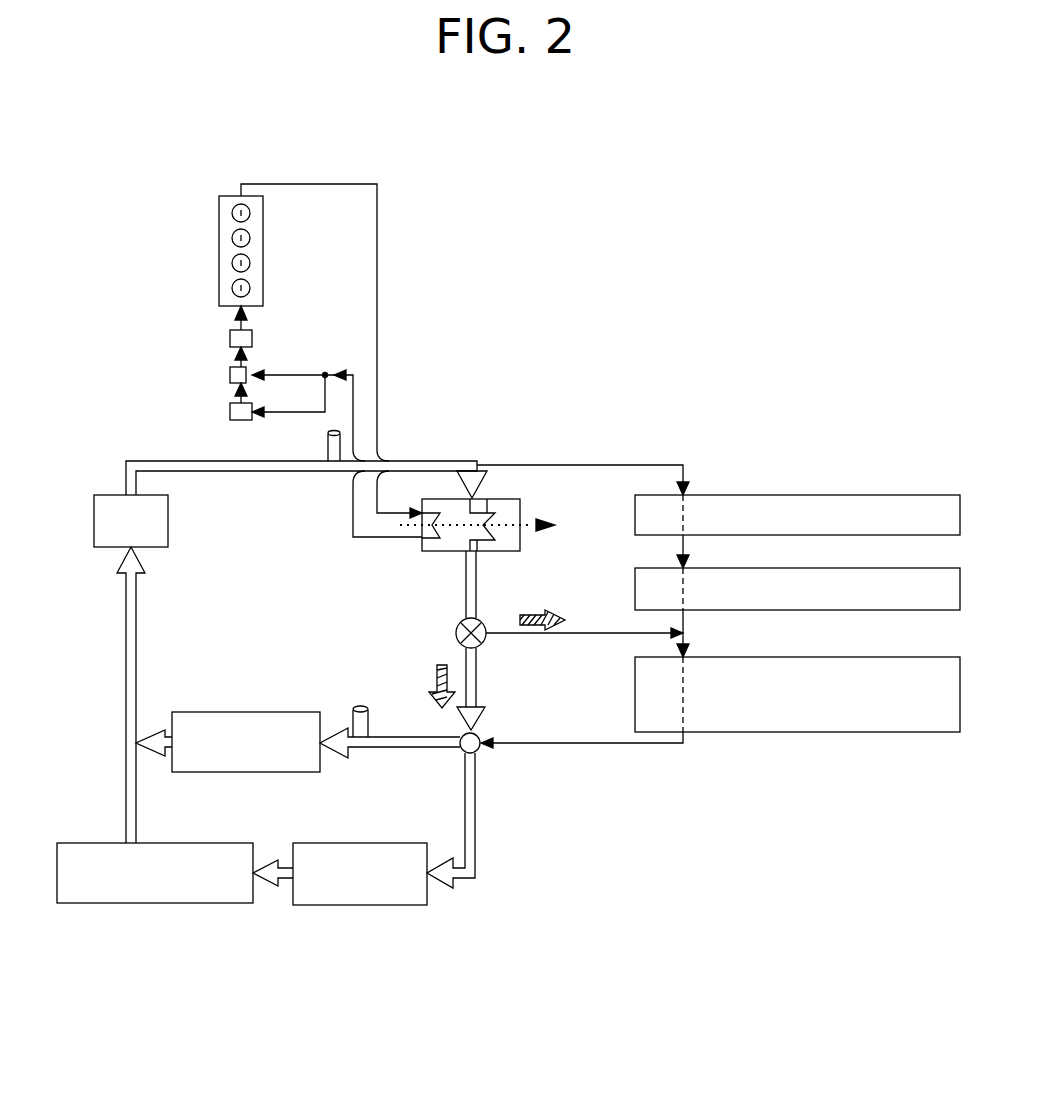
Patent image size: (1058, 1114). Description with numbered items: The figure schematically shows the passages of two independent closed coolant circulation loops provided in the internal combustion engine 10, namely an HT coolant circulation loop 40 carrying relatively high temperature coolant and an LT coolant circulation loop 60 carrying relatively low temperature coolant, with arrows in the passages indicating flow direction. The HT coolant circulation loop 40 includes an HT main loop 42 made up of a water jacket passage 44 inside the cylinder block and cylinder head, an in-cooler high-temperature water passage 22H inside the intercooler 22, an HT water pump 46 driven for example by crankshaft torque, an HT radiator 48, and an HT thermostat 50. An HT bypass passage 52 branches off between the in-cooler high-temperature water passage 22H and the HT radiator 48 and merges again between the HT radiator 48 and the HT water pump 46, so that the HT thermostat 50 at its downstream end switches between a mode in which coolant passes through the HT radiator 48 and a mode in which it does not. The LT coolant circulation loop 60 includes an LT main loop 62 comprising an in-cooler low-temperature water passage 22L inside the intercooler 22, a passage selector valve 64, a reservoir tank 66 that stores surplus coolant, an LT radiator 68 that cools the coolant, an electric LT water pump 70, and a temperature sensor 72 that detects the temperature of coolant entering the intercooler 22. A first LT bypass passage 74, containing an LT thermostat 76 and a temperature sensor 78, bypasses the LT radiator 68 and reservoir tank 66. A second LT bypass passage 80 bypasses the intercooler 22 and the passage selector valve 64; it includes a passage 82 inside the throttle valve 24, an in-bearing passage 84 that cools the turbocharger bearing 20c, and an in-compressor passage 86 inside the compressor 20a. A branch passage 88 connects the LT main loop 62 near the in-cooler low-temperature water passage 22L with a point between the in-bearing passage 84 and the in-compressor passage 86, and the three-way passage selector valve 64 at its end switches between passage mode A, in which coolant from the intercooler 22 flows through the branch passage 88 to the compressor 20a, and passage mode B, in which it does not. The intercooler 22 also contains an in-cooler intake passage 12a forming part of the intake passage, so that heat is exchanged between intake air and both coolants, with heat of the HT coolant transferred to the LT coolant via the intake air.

The internal combustion engine 10 is at (200, 223).
The in-cooler intake passage 12a is at (505, 512).
The compressor 20a is at (842, 657).
The turbocharger bearing 20c is at (832, 567).
The intercooler 22 is at (418, 555).
The in-cooler high-temperature water passage 22H is at (428, 556).
The in-cooler low-temperature water passage 22L is at (490, 505).
The throttle valve 24 is at (845, 495).
The HT coolant circulation loop 40 is at (408, 254).
The HT main loop 42 is at (378, 300).
The passage (water jacket) 44 is at (222, 248).
The HT water pump 46 is at (230, 339).
The HT radiator 48 is at (230, 412).
The HT thermostat 50 is at (230, 376).
The HT bypass passage 52 is at (292, 372).
The LT coolant circulation loop 60 is at (645, 430).
The LT main loop 62 is at (428, 461).
The passage selector valve 64 is at (488, 646).
The reservoir tank 66 is at (358, 843).
The LT radiator 68 is at (90, 843).
The LT water pump 70 is at (94, 522).
The temperature sensor 72 is at (326, 455).
The first LT bypass passage 74 is at (396, 750).
The LT thermostat 76 is at (218, 712).
The temperature sensor 78 is at (350, 710).
The second LT bypass passage 80 is at (583, 462).
The passage inside the throttle valve 82 is at (683, 510).
The in-bearing passage 84 is at (683, 585).
The in-compressor passage 86 is at (684, 720).
The branch passage 88 is at (573, 636).